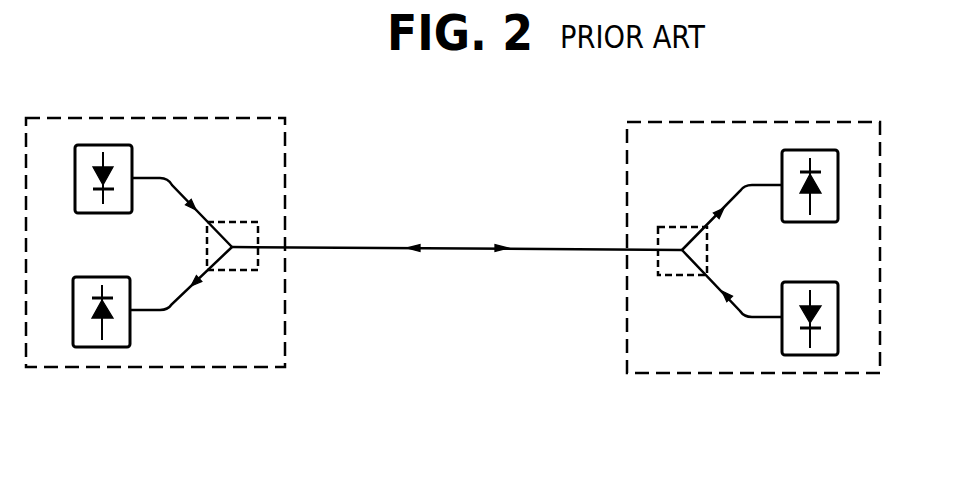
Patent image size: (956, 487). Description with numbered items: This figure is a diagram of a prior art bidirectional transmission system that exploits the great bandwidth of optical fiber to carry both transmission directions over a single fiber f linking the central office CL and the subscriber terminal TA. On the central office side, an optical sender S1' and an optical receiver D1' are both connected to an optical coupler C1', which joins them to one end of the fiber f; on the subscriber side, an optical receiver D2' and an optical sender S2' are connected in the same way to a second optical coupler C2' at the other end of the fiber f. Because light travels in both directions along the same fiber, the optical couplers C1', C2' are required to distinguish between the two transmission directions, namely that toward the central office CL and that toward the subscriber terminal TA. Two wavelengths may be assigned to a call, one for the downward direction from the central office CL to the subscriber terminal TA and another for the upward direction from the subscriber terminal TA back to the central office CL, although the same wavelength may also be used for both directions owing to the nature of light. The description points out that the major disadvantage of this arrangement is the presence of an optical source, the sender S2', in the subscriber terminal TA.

The central office CL is at (160, 118).
The subscriber terminal TA is at (754, 122).
The optical sender S1' is at (134, 196).
The optical receiver D1' is at (134, 297).
The optical coupler C1' is at (241, 236).
The optical coupler C2' is at (667, 236).
The optical receiver D2' is at (778, 200).
The optical sender S2' is at (778, 302).
The single fiber f is at (567, 248).